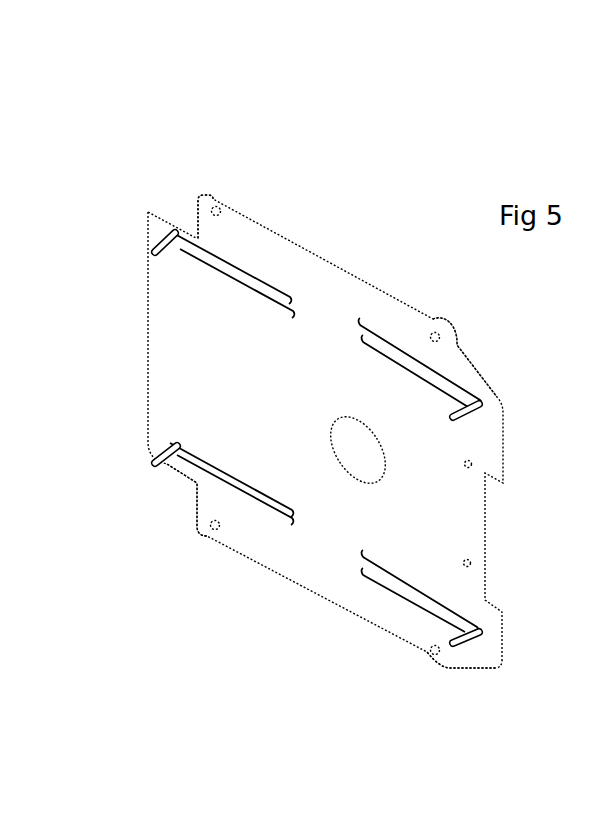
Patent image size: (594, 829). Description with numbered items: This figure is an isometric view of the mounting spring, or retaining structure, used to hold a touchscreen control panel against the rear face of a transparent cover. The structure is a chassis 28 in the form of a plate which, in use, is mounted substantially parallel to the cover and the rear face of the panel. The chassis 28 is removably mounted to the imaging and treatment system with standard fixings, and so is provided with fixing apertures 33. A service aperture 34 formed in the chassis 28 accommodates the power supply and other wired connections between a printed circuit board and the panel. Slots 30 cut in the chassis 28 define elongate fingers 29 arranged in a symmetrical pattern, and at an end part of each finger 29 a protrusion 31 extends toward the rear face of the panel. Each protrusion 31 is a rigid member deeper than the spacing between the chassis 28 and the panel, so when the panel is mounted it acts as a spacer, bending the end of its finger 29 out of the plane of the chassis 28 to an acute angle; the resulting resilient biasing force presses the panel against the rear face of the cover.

The chassis 28 is at (300, 245).
The finger 29 is at (232, 270).
The slot 30 is at (190, 238).
The protrusion 31 is at (157, 250).
The fixing aperture 33 is at (216, 207).
The service aperture 34 is at (387, 477).